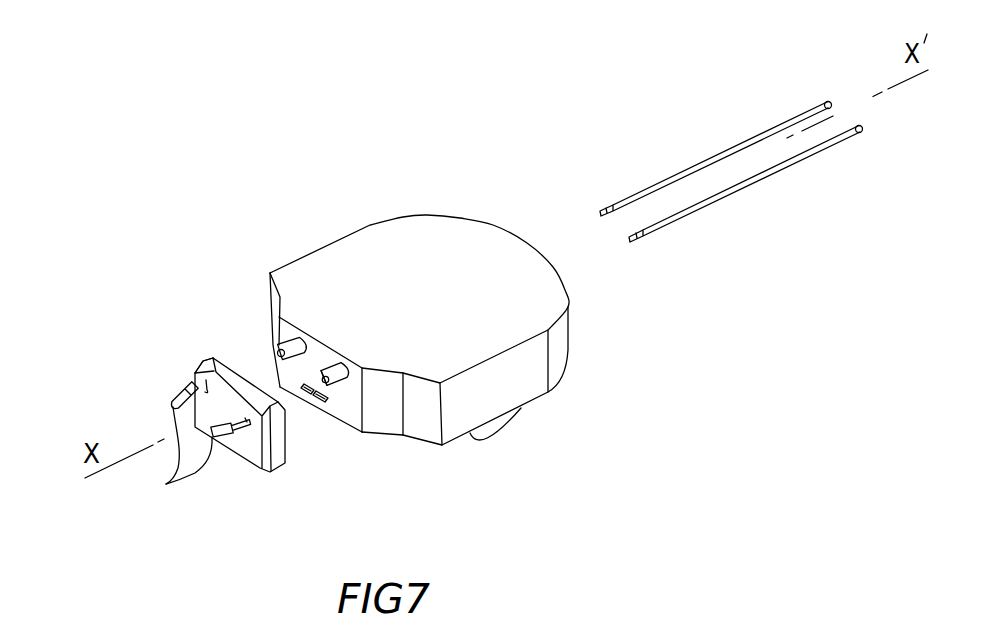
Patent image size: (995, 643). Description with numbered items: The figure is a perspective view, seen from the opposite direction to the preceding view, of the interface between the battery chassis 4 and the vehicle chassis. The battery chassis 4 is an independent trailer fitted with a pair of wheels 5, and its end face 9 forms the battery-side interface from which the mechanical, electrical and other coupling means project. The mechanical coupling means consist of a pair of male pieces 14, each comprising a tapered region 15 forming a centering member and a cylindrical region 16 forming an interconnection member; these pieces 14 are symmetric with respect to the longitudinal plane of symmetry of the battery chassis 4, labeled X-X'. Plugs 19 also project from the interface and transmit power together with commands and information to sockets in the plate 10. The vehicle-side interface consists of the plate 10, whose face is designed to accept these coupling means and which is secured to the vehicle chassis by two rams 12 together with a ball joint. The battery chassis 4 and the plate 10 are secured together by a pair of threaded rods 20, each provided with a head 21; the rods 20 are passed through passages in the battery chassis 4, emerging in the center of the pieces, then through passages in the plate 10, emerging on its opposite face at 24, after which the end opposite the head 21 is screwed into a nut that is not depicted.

The battery chassis 4 is at (473, 247).
The wheels 5 is at (498, 420).
The end face 9 is at (352, 410).
The plate 10 is at (185, 362).
The rams 12 is at (166, 484).
The male pieces 14 is at (343, 331).
The tapered region 15 is at (323, 368).
The cylindrical region 16 is at (339, 368).
The plugs 19 is at (318, 407).
The threaded rods 20 is at (731, 136).
The head 21 is at (827, 100).
The rod emergence point on plate 24 is at (214, 357).